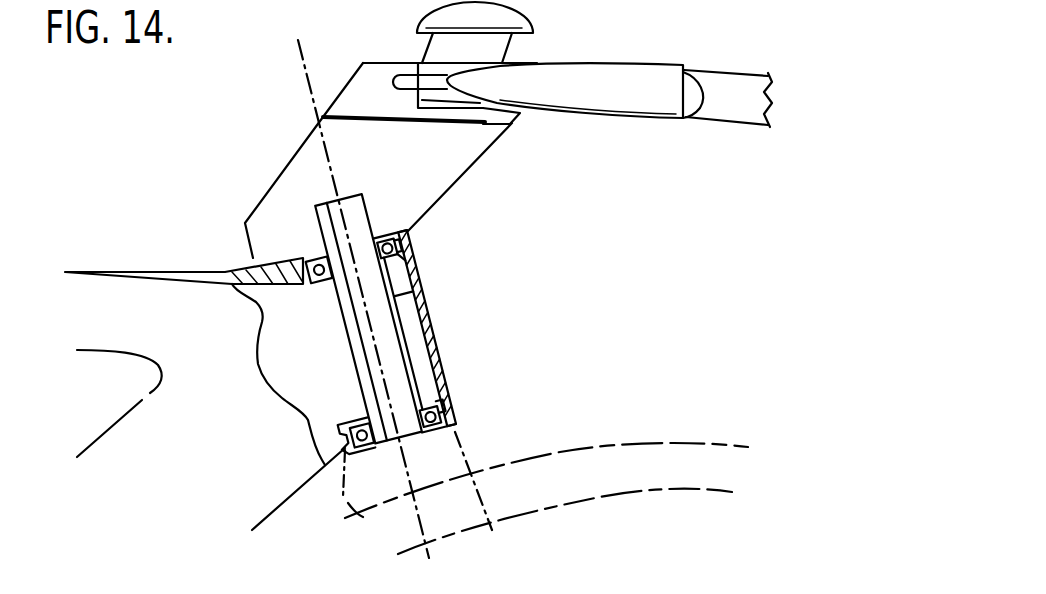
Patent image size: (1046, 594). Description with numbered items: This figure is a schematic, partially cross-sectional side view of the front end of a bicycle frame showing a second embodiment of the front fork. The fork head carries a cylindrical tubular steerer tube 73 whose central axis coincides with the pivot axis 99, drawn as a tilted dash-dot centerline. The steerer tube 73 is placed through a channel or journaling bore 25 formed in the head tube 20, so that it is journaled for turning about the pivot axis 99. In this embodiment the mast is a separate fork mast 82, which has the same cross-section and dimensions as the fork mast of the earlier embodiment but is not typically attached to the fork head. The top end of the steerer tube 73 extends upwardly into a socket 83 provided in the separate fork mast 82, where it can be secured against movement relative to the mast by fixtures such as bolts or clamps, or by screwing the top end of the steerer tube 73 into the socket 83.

The pivot axis 99 is at (300, 50).
The separate fork mast 82 is at (305, 160).
The socket 83 is at (367, 207).
The channel or journaling bore 25 is at (403, 293).
The steerer tube 73 is at (392, 337).
The head tube 20 is at (442, 363).